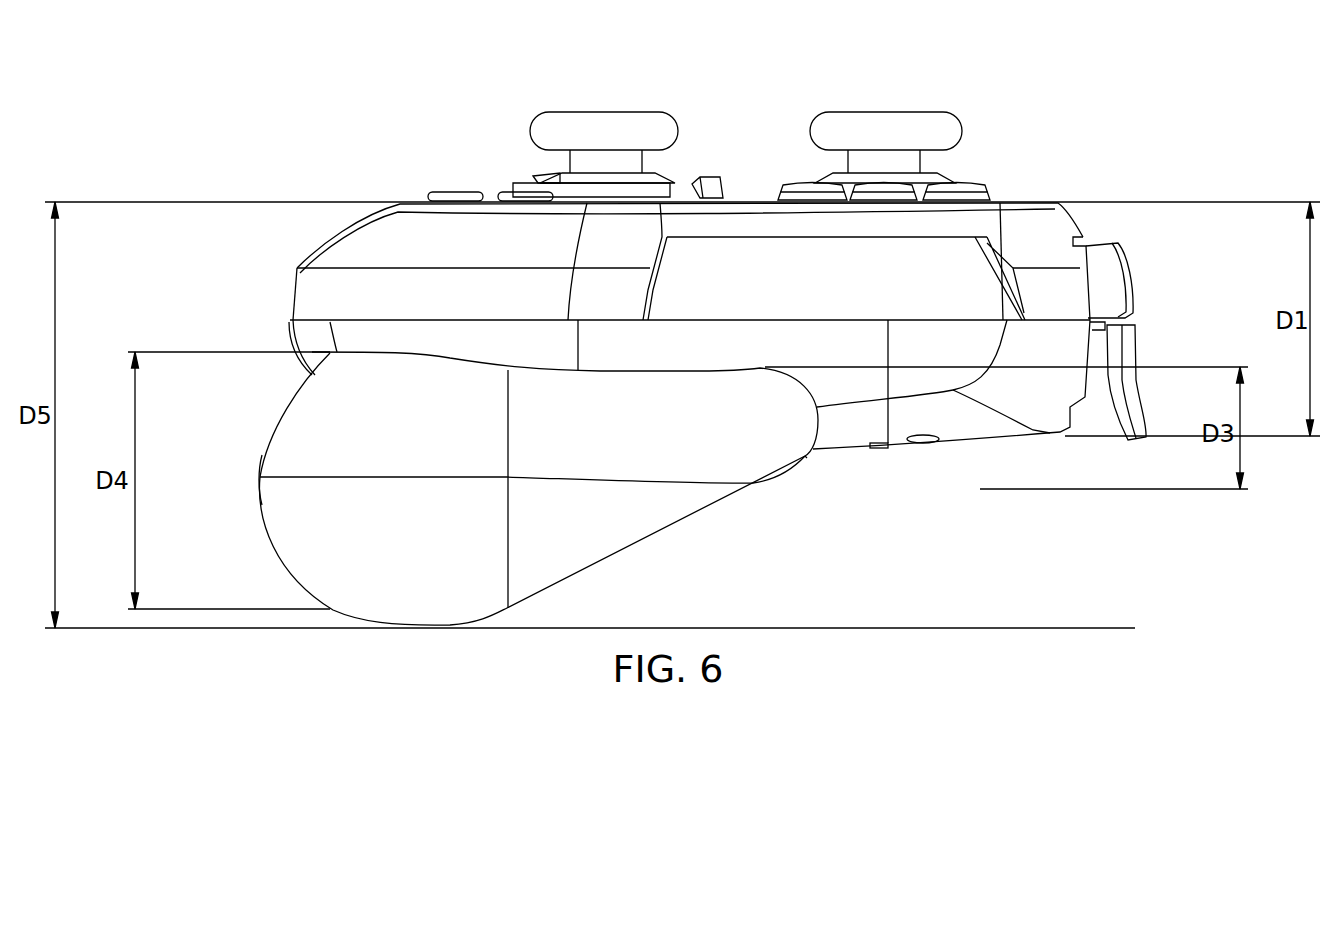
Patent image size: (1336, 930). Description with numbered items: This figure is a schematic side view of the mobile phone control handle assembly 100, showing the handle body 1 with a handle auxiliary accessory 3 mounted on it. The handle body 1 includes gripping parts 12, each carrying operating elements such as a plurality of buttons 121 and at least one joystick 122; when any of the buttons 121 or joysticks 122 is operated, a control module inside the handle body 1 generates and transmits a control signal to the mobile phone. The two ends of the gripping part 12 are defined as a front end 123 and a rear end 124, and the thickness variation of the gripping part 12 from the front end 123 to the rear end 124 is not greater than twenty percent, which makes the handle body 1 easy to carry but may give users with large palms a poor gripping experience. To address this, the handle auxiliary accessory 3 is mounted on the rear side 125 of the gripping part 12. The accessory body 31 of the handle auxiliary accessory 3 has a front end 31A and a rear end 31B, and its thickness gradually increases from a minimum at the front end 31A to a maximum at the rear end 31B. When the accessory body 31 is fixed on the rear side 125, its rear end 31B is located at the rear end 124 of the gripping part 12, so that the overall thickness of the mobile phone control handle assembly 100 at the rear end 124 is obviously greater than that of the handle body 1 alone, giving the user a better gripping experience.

The mobile phone control handle assembly 100 is at (356, 92).
The handle body 1 is at (1026, 184).
The gripping part 12 is at (978, 447).
The button 121 is at (1126, 279).
The joystick 122 is at (605, 126).
The front end 123 is at (1098, 234).
The rear end 124 is at (312, 236).
The rear side 125 is at (285, 367).
The handle auxiliary accessory 3 is at (276, 549).
The accessory body 31 is at (298, 441).
The front end 31A is at (803, 465).
The rear end 31B is at (247, 499).